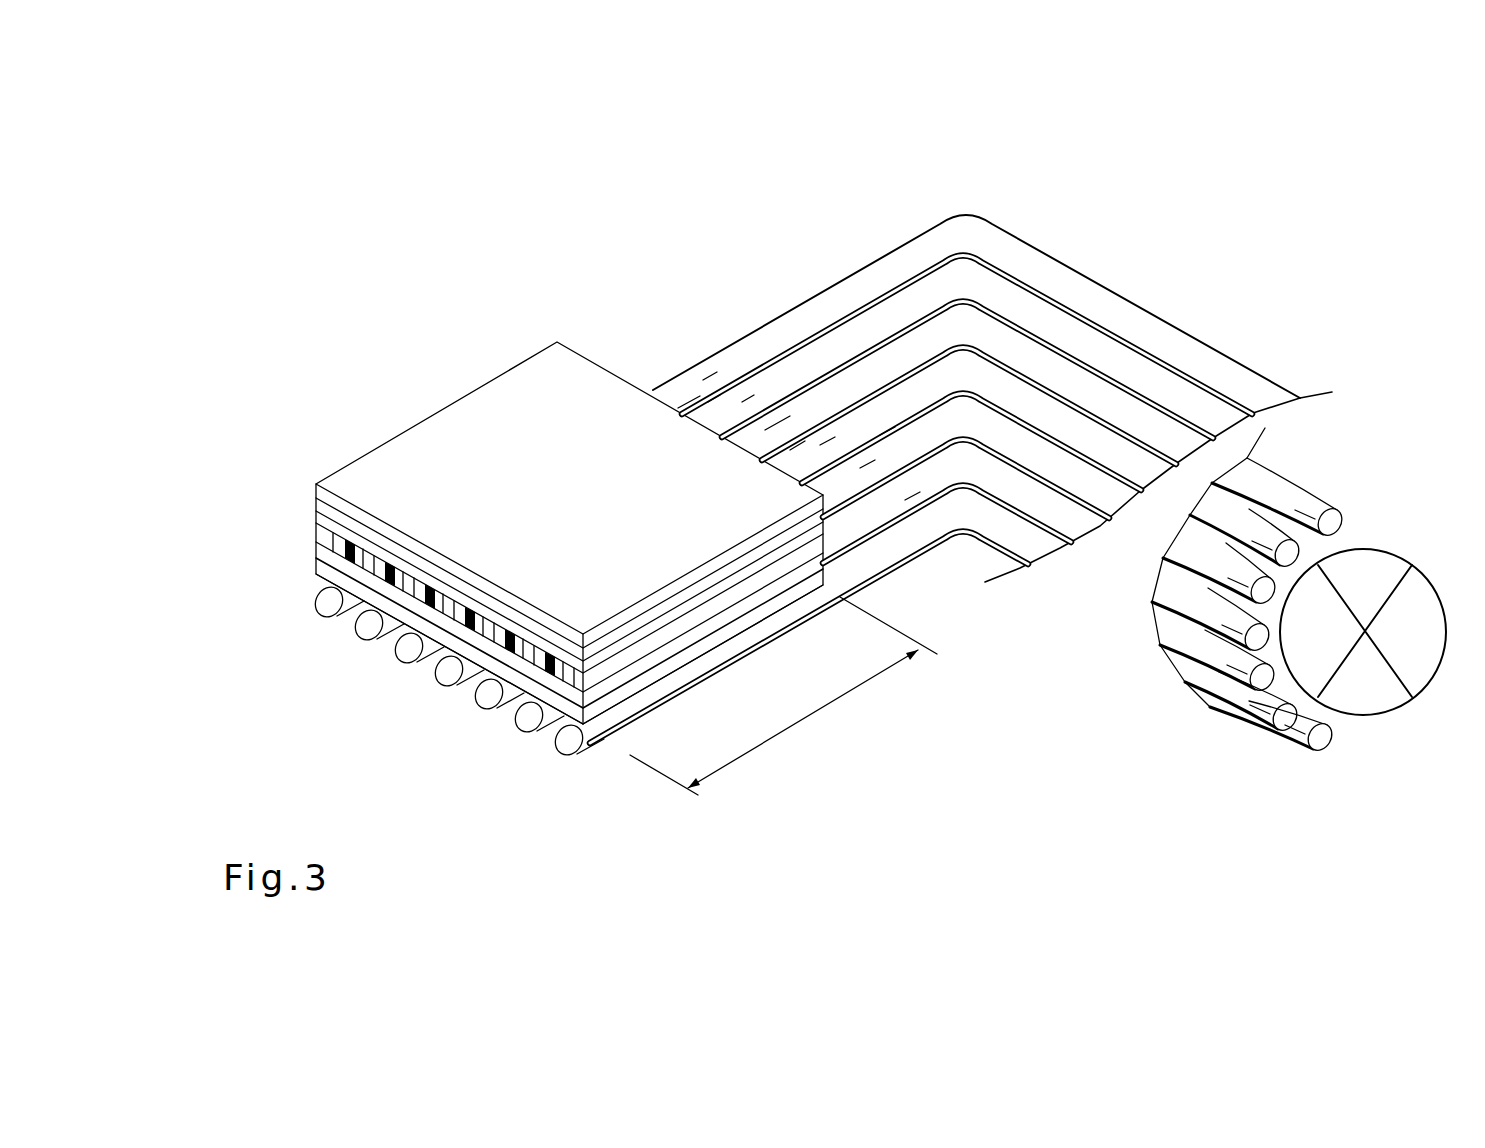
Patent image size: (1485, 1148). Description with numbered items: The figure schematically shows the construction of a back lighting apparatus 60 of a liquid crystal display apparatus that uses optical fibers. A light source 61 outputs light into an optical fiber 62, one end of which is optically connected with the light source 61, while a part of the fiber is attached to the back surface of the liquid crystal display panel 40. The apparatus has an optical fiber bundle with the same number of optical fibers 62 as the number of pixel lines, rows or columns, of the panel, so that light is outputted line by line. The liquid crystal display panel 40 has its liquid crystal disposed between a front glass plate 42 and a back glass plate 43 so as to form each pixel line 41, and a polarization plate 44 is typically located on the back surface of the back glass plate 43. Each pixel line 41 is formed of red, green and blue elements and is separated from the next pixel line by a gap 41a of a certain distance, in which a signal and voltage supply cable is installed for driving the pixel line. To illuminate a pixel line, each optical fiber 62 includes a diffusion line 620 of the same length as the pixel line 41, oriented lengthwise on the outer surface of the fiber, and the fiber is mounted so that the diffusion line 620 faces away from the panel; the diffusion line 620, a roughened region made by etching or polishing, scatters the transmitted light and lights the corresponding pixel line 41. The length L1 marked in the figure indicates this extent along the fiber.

The back lighting apparatus 60 is at (480, 261).
The liquid crystal display panel 40 is at (299, 548).
The pixel line 41 is at (326, 536).
The gap 41a is at (348, 553).
The front glass plate 42 is at (323, 512).
The back glass plate 43 is at (316, 559).
The polarization plate 44 is at (318, 573).
The diffusion line 620 is at (571, 755).
The optical fiber 62 is at (963, 230).
The light source 61 is at (1373, 702).
The length L1 is at (783, 696).